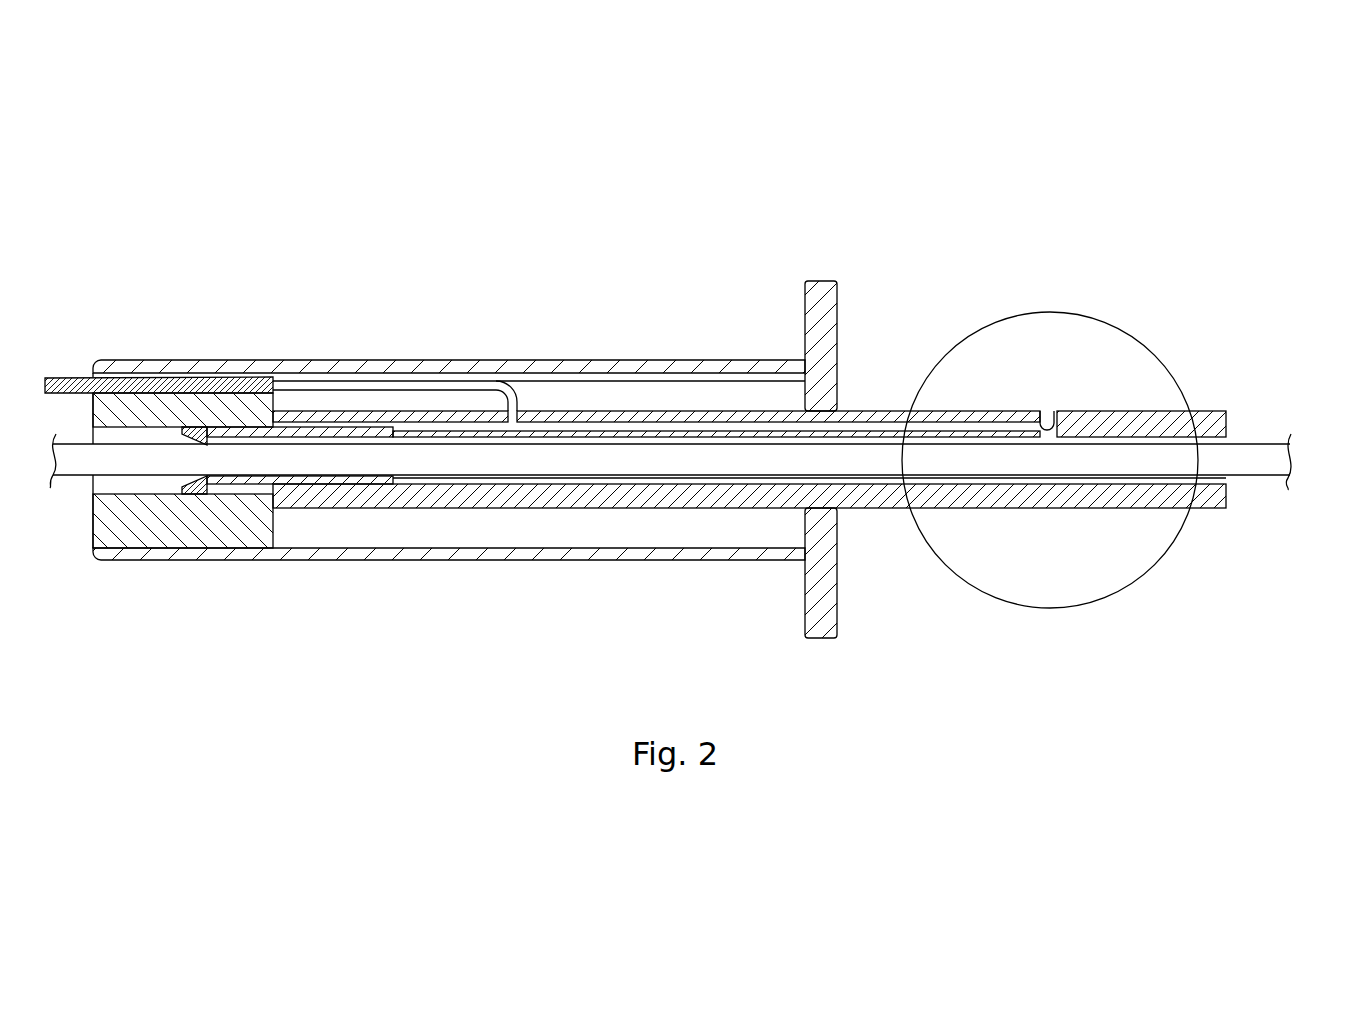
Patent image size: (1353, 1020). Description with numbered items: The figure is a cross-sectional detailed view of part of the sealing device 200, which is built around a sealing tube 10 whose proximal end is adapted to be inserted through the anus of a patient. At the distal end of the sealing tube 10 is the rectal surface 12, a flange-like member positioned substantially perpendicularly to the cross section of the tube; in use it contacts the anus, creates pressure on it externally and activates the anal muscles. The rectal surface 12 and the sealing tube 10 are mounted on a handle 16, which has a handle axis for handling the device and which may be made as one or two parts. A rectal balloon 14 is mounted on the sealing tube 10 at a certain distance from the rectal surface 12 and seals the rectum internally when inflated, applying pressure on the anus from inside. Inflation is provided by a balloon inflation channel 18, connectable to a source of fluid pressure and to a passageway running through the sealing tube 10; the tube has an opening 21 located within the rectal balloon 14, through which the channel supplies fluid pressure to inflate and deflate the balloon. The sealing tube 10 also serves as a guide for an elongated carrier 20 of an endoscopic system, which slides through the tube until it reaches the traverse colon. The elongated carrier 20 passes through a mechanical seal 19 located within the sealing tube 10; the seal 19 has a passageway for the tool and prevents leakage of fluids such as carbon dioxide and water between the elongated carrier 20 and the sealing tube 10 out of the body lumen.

The sealing device 200 is at (697, 403).
The sealing tube 10 is at (695, 411).
The rectal surface 12 is at (836, 281).
The rectal balloon 14 is at (1040, 545).
The handle 16 is at (195, 553).
The balloon inflation channel 18 is at (495, 386).
The mechanical seal 19 is at (184, 427).
The elongated carrier 20 is at (1253, 468).
The opening 21 is at (1048, 424).